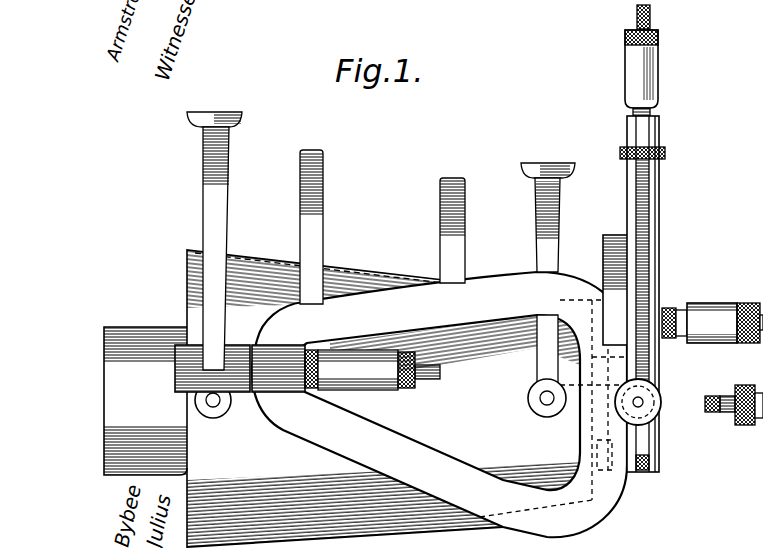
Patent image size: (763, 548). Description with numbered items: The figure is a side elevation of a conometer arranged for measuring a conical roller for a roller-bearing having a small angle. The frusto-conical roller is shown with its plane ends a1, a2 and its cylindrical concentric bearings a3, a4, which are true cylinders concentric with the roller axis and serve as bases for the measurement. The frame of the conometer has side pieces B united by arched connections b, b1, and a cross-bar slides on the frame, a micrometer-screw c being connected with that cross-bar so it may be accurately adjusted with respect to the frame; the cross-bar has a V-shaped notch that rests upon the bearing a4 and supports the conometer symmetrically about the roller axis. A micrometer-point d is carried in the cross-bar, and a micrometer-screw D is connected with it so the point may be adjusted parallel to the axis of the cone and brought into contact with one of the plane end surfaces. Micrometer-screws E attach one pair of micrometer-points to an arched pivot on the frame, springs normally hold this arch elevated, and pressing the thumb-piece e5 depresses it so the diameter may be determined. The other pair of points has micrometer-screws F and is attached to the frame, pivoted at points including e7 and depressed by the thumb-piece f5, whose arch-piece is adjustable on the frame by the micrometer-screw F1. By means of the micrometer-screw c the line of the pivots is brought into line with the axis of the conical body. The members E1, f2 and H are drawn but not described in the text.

The plane end a1 is at (214, 487).
The plane end a2 is at (601, 502).
The cylindrical concentric bearing a3 is at (145, 401).
The cylindrical concentric bearing a4 is at (660, 412).
The side piece B is at (355, 312).
The arched connection b is at (312, 150).
The arched connection b1 is at (447, 178).
The micrometer-screw c is at (659, 70).
The micrometer-point d is at (590, 298).
The micrometer-screw D is at (722, 306).
The micrometer-screw E is at (546, 418).
The adjusting screw E1 is at (742, 426).
The thumb-piece e5 is at (535, 176).
The pivot point e7 is at (762, 445).
The micrometer-screw F is at (214, 420).
The micrometer-screw F1 is at (385, 392).
The guide bar f2 is at (660, 250).
The thumb-piece f5 is at (236, 112).
The body part H is at (278, 462).